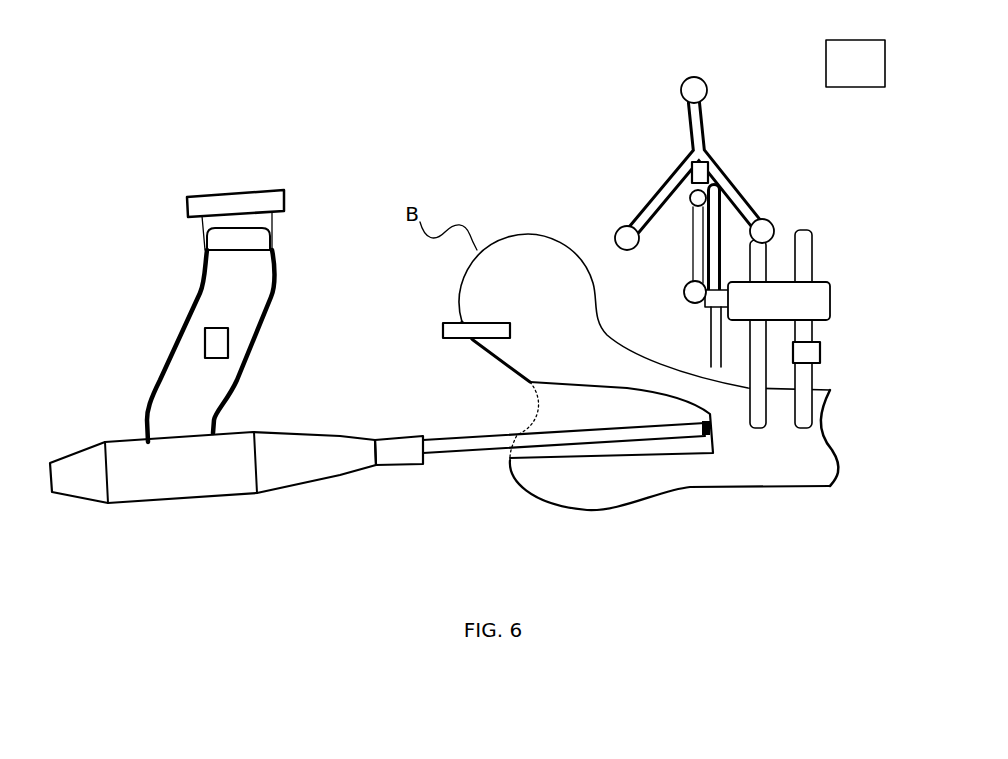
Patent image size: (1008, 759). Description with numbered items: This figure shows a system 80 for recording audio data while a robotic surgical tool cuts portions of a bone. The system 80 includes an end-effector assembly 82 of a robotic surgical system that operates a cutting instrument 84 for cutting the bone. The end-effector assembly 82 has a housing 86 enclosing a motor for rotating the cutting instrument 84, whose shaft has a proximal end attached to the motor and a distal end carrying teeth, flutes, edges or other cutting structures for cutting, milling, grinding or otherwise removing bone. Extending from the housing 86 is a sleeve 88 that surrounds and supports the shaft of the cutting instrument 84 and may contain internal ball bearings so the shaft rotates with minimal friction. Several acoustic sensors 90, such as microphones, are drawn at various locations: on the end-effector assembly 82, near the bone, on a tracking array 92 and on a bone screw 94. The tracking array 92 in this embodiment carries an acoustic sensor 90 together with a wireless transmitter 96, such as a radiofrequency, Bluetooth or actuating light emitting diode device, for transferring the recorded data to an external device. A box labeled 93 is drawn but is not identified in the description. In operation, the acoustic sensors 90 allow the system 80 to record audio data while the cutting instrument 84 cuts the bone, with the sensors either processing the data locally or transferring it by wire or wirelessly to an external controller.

The system 80 is at (166, 103).
The end-effector assembly 82 is at (158, 373).
The cutting instrument 84 is at (693, 448).
The housing 86 is at (205, 495).
The sleeve 88 is at (452, 455).
The acoustic sensor 90 is at (228, 333).
The tracking array 92 is at (741, 58).
The controller 93 is at (855, 63).
The bone screw 94 is at (810, 240).
The wireless transmitter 96 is at (682, 200).